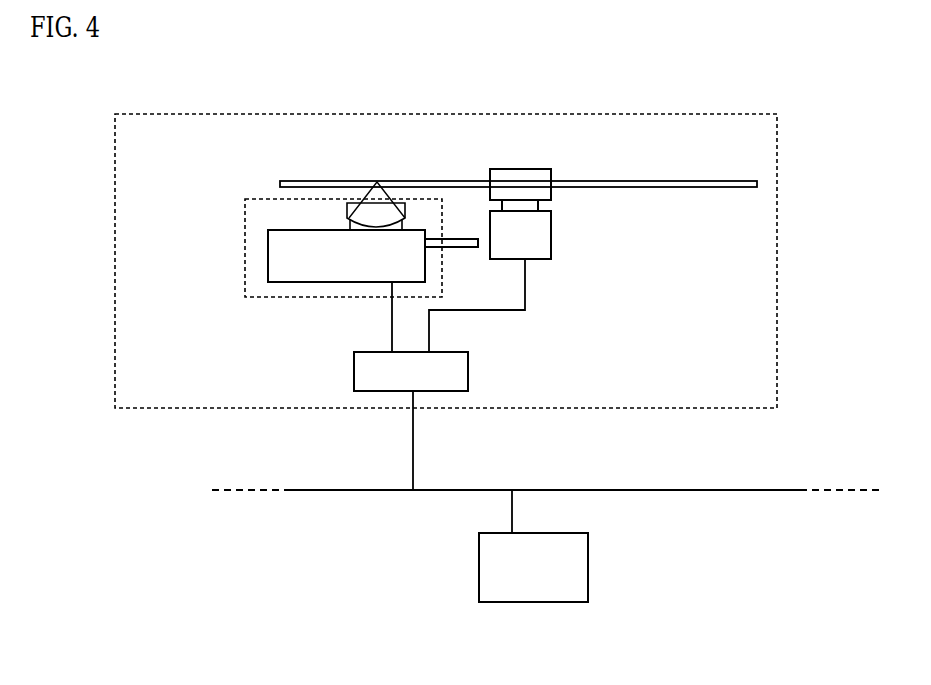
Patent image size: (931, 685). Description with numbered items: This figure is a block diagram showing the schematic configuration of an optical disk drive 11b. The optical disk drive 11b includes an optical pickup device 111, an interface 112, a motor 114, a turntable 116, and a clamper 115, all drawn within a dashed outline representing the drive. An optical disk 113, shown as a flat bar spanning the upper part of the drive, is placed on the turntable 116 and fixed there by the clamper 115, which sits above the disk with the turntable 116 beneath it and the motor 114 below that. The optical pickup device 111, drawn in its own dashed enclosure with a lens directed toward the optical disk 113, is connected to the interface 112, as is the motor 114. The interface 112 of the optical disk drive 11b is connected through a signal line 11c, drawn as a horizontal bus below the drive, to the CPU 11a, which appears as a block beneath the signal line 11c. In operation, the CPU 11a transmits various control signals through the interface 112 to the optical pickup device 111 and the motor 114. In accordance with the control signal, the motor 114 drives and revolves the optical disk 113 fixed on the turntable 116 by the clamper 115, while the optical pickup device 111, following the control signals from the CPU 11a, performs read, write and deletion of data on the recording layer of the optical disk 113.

The CPU 11a is at (588, 565).
The optical disk drive 11b is at (382, 113).
The signal line 11c is at (772, 490).
The optical pickup device 111 is at (267, 298).
The interface 112 is at (468, 370).
The optical disk 113 is at (632, 181).
The motor 114 is at (551, 240).
The clamper 115 is at (520, 168).
The turntable 116 is at (551, 193).